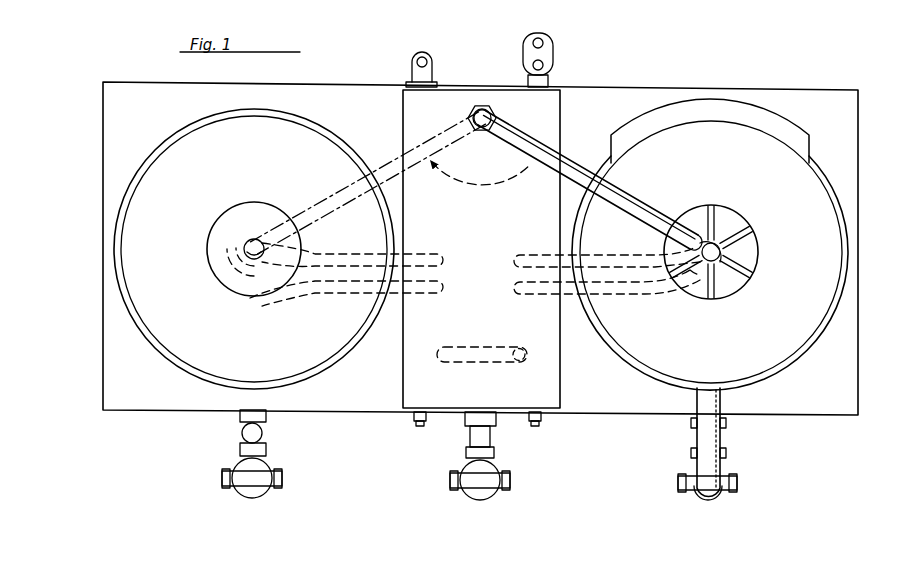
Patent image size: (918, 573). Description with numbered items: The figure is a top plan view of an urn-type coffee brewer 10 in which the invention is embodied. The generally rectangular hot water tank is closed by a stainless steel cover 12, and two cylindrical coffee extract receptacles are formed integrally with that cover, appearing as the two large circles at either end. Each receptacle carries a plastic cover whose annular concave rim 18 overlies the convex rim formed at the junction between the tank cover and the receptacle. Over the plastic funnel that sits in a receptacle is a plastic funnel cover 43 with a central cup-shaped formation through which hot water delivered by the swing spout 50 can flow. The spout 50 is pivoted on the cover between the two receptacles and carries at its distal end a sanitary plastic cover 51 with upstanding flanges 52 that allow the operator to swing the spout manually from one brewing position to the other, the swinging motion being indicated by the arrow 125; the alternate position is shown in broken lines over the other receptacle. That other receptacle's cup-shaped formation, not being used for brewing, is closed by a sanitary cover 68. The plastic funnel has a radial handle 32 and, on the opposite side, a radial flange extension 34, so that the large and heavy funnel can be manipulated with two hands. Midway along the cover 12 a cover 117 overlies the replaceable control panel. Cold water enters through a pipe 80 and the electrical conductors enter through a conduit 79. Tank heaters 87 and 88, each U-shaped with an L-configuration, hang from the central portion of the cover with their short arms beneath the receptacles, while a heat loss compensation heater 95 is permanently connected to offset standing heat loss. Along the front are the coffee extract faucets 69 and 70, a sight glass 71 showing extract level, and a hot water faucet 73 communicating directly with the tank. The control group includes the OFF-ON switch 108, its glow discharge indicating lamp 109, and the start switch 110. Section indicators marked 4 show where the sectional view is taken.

The urn-type coffee brewer 10 is at (77, 82).
The cover 12 is at (147, 121).
The annular concave rim 18 is at (148, 343).
The plastic funnel cover 43 is at (218, 333).
The sanitary cover 68 is at (242, 203).
The sanitary plastic cover 51 is at (730, 222).
The upstanding flanges 52 is at (730, 292).
The radial flange extension 34 is at (745, 108).
The swing spout 50 is at (387, 167).
The arrow 125 is at (479, 186).
The cover 117 is at (528, 225).
The pipe 80 is at (410, 72).
The conduit 79 is at (555, 53).
The tank heater 87 is at (343, 332).
The tank heater 88 is at (622, 300).
The heat loss compensation heater 95 is at (496, 365).
The section line 4 is at (508, 293).
The OFF-ON switch 108 is at (417, 425).
The start switch 110 is at (548, 424).
The glow discharge indicating lamp 109 is at (478, 413).
The coffee extract faucet 69 is at (259, 454).
The sight glass 71 is at (246, 436).
The hot water faucet 73 is at (482, 456).
The handle 32 is at (702, 442).
The coffee extract faucet 70 is at (724, 497).